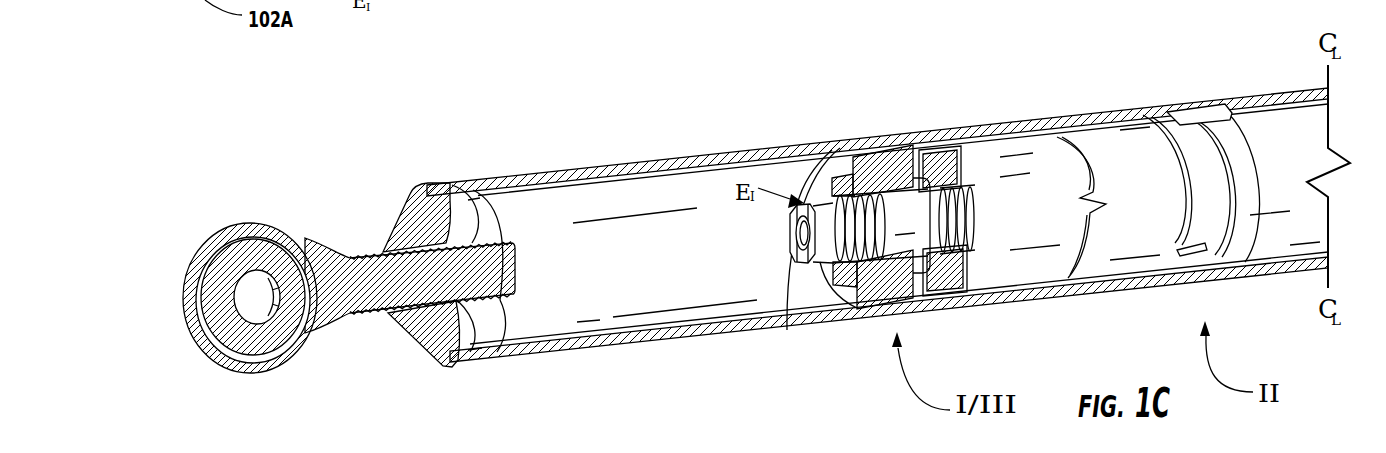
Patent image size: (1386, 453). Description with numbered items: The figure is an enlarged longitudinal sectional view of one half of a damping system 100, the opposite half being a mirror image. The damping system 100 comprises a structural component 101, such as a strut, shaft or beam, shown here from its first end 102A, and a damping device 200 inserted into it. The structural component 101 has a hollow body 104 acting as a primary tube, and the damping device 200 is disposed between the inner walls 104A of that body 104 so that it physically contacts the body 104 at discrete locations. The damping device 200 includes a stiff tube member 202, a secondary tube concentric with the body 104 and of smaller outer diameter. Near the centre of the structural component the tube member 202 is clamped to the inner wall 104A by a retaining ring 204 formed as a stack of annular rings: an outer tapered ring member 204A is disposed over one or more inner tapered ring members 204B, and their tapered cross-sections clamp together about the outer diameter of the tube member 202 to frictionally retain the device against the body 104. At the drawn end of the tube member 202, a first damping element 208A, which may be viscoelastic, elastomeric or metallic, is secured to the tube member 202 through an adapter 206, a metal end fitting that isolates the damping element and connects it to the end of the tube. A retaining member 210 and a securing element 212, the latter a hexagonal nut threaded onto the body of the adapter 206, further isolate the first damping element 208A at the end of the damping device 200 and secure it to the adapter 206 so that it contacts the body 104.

The damping system 100 is at (474, 142).
The structural component 101 is at (597, 348).
The first end 102A is at (247, 213).
The hollow body 104 is at (652, 162).
The inner wall 104A is at (673, 330).
The damping device 200 is at (1240, 88).
The tube member 202 is at (1115, 250).
The retaining ring 204 is at (1190, 95).
The outer tapered ring member 204A is at (1175, 113).
The inner tapered ring member 204B is at (1232, 262).
The adapter 206 is at (921, 270).
The first damping element 208A is at (886, 292).
The retaining member 210 is at (806, 202).
The securing element 212 is at (793, 262).